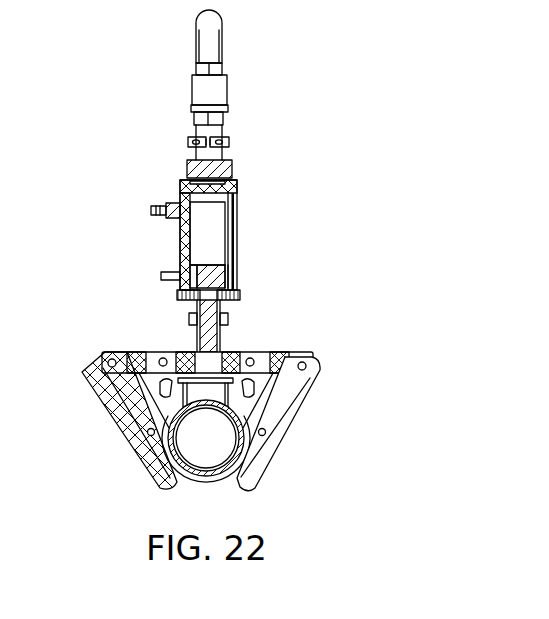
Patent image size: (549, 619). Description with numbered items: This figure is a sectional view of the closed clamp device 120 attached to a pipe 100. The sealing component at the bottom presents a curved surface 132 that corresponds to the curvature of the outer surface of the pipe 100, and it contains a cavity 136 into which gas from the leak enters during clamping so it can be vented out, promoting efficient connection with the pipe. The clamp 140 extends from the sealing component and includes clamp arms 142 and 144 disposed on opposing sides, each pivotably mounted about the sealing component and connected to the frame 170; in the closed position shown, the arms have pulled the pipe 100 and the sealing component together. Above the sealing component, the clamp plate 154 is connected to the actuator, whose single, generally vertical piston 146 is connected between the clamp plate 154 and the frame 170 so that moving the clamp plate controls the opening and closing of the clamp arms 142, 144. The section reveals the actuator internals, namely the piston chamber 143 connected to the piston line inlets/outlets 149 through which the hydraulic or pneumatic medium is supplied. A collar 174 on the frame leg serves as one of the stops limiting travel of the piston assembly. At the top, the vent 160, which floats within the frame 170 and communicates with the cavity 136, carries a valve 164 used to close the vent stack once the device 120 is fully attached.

The pipe 100 is at (222, 482).
The device 120 is at (328, 179).
The curved surface 132 is at (263, 370).
The cavity 136 is at (196, 388).
The clamp 140 is at (101, 332).
The clamp arm 142 is at (118, 427).
The piston chamber 143 is at (218, 238).
The clamp arm 144 is at (308, 407).
The piston 146 is at (209, 284).
The piston line inlets/outlets 149 is at (163, 200).
The clamp plate 154 is at (239, 352).
The vent 160 is at (233, 88).
The valve 164 is at (218, 42).
The frame 170 is at (233, 159).
The collar 174 is at (221, 320).